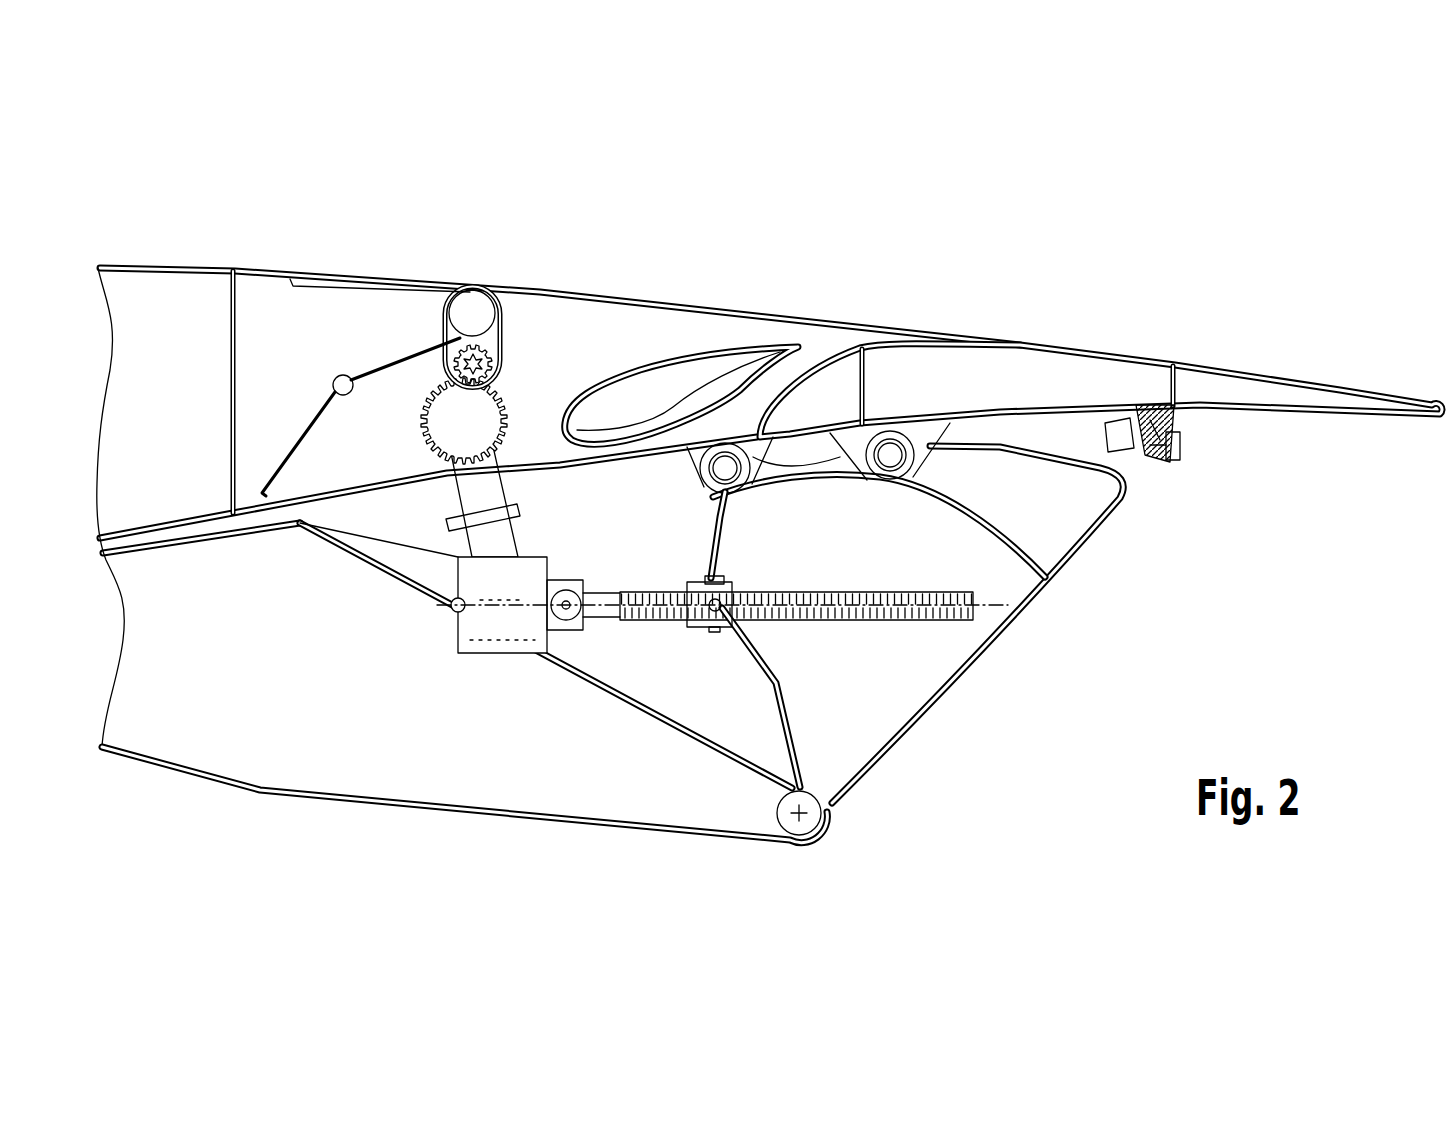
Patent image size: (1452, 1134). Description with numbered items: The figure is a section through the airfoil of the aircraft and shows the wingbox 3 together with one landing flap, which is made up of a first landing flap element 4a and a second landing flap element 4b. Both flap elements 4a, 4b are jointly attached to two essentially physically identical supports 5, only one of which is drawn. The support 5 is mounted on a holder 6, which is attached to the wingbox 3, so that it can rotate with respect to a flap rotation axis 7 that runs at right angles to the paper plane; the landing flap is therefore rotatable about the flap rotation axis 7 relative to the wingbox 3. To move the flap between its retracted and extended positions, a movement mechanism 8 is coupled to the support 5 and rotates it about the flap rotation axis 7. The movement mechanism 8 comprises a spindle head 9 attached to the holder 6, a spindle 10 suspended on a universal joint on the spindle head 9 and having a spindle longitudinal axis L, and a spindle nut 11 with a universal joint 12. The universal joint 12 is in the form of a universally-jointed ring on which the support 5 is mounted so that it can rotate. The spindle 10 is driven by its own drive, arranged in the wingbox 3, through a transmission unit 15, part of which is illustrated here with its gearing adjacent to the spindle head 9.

The wingbox 3 is at (183, 288).
The first landing flap element 4a is at (697, 368).
The second landing flap element 4b is at (1035, 360).
The support 5 is at (948, 690).
The holder 6 is at (450, 795).
The flap rotation axis 7 is at (822, 825).
The movement mechanism 8 is at (532, 610).
The spindle head 9 is at (490, 648).
The spindle 10 is at (838, 598).
The spindle nut 11 is at (705, 645).
The universal joint 12 is at (752, 639).
The transmission unit 15 is at (467, 507).
The spindle longitudinal axis L is at (997, 601).